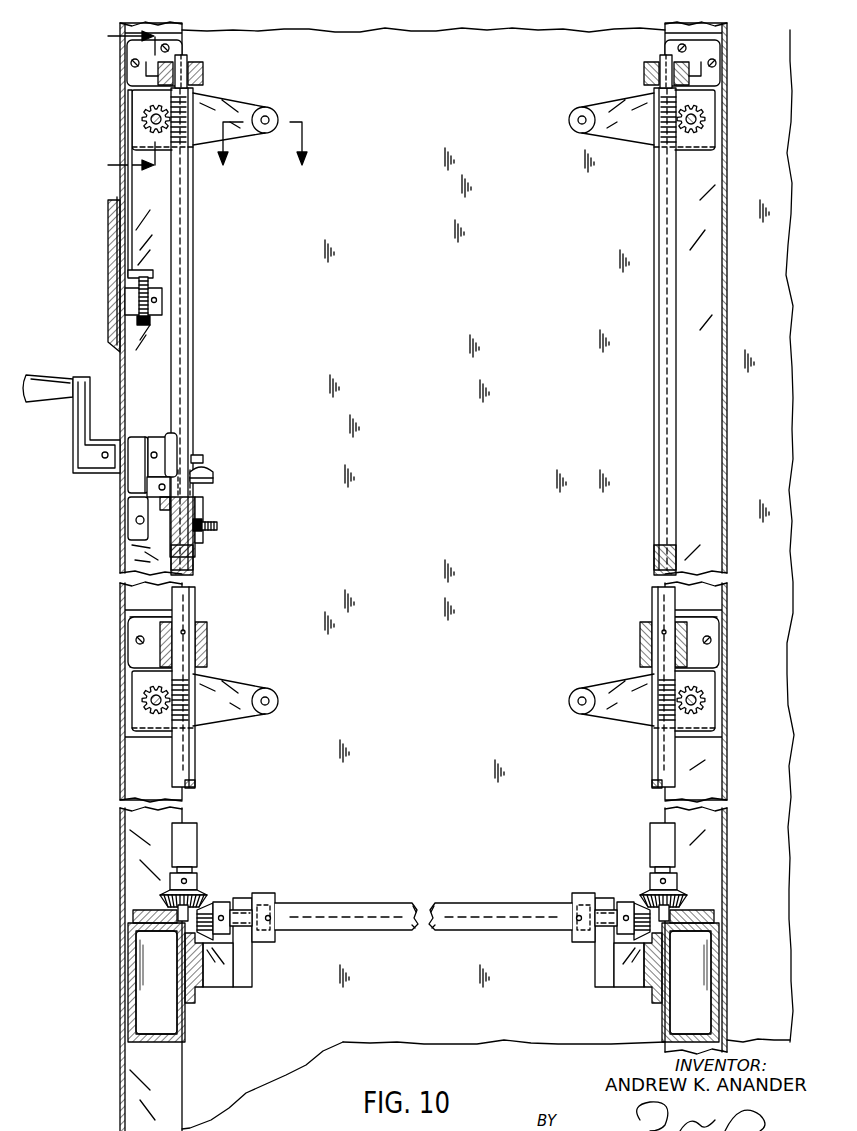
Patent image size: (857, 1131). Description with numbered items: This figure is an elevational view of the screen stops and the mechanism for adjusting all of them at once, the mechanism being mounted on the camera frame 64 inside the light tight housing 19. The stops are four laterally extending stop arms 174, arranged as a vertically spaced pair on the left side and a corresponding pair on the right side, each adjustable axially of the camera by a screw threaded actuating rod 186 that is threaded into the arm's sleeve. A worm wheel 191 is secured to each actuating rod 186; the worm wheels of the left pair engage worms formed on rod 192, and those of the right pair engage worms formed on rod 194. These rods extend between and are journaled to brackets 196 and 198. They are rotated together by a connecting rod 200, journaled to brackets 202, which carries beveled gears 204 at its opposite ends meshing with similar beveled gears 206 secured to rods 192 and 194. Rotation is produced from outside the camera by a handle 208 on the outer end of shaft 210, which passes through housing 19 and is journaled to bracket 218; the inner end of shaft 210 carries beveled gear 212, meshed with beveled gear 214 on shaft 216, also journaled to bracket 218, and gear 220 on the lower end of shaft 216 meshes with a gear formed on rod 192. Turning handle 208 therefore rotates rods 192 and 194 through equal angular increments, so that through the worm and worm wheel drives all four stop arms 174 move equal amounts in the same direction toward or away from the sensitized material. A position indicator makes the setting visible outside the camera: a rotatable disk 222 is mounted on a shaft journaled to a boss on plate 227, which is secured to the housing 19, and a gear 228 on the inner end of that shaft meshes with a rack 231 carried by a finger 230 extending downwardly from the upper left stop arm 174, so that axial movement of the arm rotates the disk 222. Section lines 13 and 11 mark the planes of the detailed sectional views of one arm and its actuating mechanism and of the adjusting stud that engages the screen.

The section line 11- 11 is at (271, 159).
The section line 13- 13 is at (115, 106).
The housing 19 is at (118, 185).
The camera frame 64 is at (155, 1040).
The stop arm 174 is at (245, 100).
The screw threaded actuating rod 186 is at (145, 125).
The worm wheel 191 is at (145, 112).
The rod 192 is at (197, 320).
The rod 194 is at (656, 445).
The bracket 196 is at (203, 80).
The bracket 198 is at (143, 910).
The connecting rod 200 is at (350, 903).
The bracket 202 is at (222, 987).
The beveled gear 204 is at (212, 902).
The beveled gear 206 is at (200, 888).
The handle 208 is at (80, 425).
The shaft 210 is at (131, 440).
The beveled gear 212 is at (165, 433).
The beveled gear 214 is at (208, 477).
The shaft 216 is at (197, 462).
The bracket 218 is at (137, 485).
The gear 220 is at (217, 528).
The rotatable disk 222 is at (108, 290).
The plate 227 is at (118, 217).
The gear 228 is at (150, 322).
The finger 230 is at (128, 217).
The rack 231 is at (157, 277).